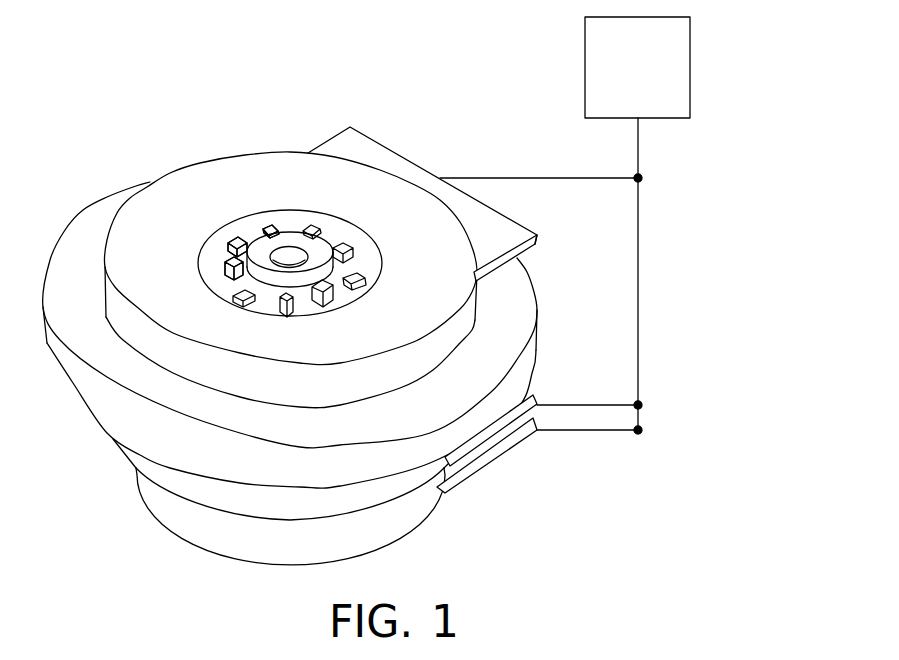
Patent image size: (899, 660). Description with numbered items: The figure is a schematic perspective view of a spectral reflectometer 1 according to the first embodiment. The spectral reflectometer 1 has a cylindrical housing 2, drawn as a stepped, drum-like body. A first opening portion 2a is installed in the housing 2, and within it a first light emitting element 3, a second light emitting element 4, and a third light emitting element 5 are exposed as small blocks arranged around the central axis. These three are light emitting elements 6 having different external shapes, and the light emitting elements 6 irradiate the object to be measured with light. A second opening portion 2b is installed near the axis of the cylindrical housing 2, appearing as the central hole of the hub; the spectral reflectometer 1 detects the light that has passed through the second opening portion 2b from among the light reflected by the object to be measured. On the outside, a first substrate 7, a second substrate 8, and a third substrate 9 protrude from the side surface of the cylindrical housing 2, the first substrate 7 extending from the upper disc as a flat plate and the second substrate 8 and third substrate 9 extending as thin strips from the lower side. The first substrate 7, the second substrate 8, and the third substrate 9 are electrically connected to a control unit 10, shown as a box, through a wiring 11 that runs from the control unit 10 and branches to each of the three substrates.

The spectral reflectometer 1 is at (116, 79).
The cylindrical housing 2 is at (534, 355).
The first opening portion 2a is at (293, 250).
The second opening portion 2b is at (347, 238).
The first light emitting element 3 is at (270, 227).
The second light emitting element 4 is at (239, 247).
The third light emitting element 5 is at (230, 254).
The light emitting elements 6 is at (295, 271).
The first substrate 7 is at (480, 201).
The second substrate 8 is at (533, 413).
The third substrate 9 is at (498, 470).
The control unit 10 is at (686, 78).
The wiring 11 is at (639, 216).